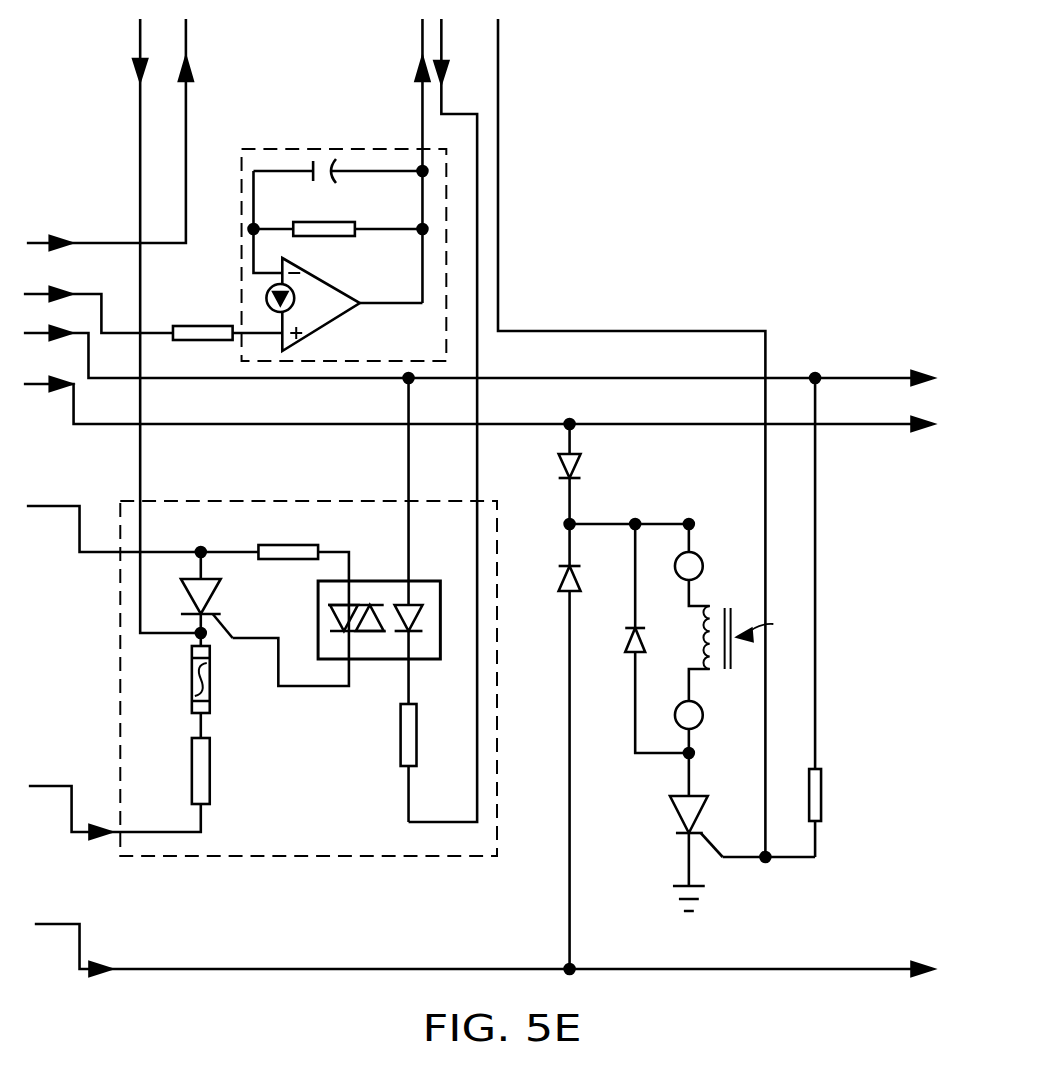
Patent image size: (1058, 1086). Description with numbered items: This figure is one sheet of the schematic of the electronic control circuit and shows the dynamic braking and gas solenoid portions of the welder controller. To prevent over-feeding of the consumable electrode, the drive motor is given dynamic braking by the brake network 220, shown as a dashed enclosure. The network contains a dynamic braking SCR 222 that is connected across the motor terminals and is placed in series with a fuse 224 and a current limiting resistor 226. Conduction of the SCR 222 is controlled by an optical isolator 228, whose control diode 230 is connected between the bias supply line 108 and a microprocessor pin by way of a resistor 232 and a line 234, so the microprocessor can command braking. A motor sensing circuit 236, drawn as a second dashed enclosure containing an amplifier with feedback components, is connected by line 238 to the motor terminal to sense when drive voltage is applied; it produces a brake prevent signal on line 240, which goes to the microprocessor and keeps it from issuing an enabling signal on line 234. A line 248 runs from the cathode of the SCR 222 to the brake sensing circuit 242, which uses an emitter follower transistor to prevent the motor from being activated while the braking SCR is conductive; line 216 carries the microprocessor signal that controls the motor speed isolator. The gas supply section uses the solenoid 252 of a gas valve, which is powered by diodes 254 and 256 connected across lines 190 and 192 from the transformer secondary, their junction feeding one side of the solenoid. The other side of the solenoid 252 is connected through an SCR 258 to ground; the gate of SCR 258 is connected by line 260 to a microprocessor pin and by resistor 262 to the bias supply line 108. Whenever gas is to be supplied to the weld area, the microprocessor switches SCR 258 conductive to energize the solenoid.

The line 108 is at (38, 331).
The line 190 is at (105, 425).
The line 192 is at (154, 966).
The line 216 is at (187, 110).
The brake network 220 is at (332, 857).
The dynamic braking SCR 222 is at (216, 590).
The fuse 224 is at (208, 680).
The current limiting resistor 226 is at (210, 766).
The optical isolator 228 is at (370, 660).
The control diode 230 is at (412, 598).
The resistor 232 is at (395, 752).
The line 234 is at (443, 30).
The motor sensing circuit 236 is at (344, 147).
The line 238 is at (38, 292).
The line 240 is at (421, 118).
The brake sensing circuit 242 is at (330, 283).
The line 248 is at (138, 106).
The solenoid 252 is at (710, 610).
The diode 254 is at (580, 464).
The diode 256 is at (562, 572).
The SCR 258 is at (706, 798).
The line 260 is at (500, 36).
The resistor 262 is at (825, 782).